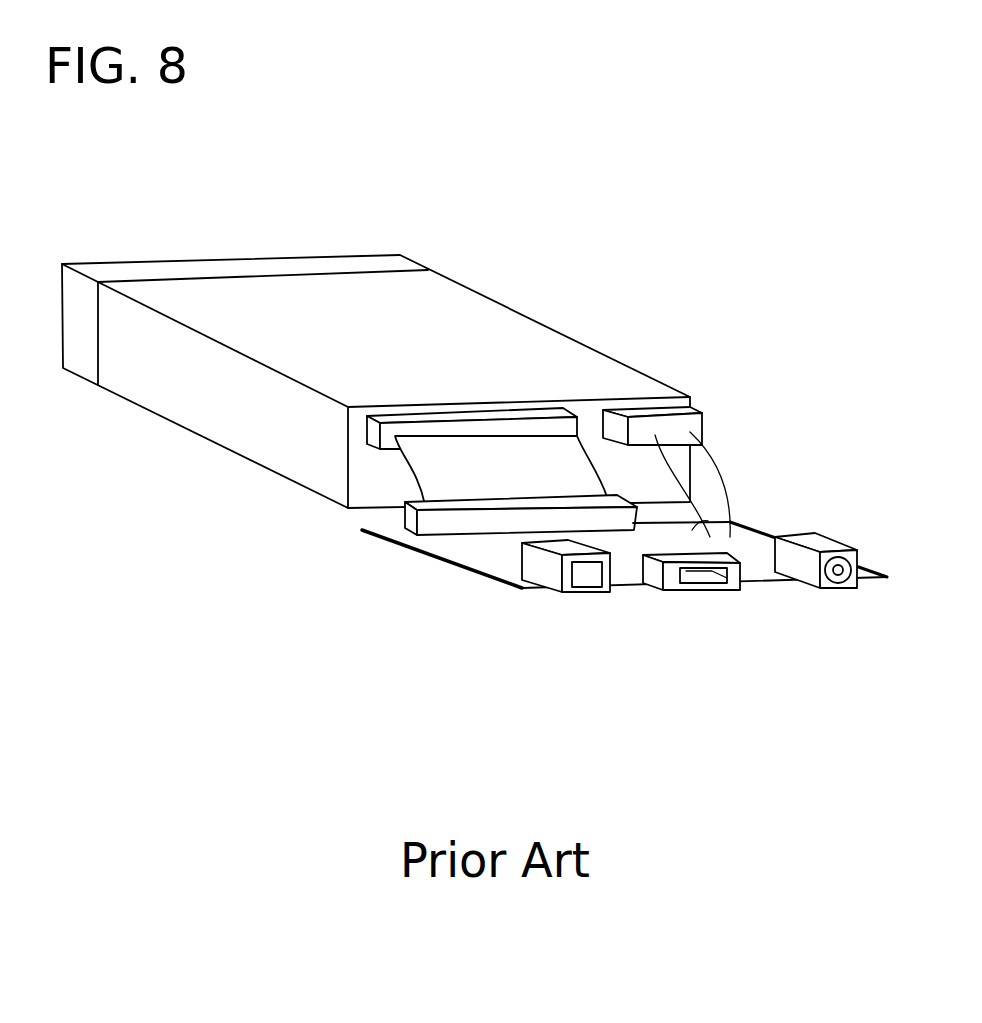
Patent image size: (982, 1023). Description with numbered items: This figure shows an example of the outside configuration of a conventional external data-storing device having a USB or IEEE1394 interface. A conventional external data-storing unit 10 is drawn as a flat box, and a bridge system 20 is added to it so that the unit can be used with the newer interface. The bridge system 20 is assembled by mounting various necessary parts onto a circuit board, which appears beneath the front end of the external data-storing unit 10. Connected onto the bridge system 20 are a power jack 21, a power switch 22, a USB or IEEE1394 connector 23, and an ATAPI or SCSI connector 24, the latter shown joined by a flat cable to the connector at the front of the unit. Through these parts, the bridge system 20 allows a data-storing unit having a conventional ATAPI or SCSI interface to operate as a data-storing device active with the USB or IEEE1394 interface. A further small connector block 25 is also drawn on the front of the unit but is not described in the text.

The external data-storing unit 10 is at (450, 303).
The bridge system 20 is at (730, 520).
The power jack 21 is at (827, 588).
The power switch 22 is at (673, 582).
The USB or IEEE1394 connector 23 is at (548, 573).
The ATAPI or SCSI connector 24 is at (370, 431).
The connector 25 is at (667, 422).